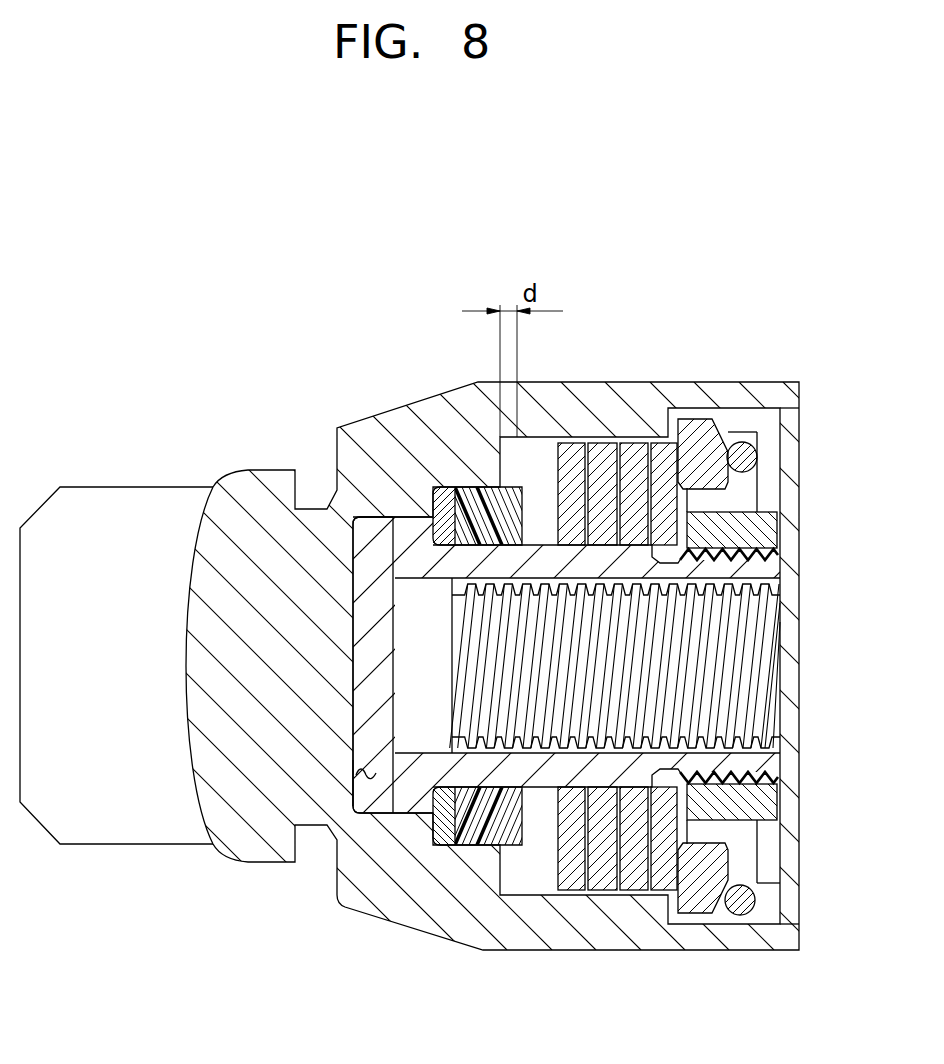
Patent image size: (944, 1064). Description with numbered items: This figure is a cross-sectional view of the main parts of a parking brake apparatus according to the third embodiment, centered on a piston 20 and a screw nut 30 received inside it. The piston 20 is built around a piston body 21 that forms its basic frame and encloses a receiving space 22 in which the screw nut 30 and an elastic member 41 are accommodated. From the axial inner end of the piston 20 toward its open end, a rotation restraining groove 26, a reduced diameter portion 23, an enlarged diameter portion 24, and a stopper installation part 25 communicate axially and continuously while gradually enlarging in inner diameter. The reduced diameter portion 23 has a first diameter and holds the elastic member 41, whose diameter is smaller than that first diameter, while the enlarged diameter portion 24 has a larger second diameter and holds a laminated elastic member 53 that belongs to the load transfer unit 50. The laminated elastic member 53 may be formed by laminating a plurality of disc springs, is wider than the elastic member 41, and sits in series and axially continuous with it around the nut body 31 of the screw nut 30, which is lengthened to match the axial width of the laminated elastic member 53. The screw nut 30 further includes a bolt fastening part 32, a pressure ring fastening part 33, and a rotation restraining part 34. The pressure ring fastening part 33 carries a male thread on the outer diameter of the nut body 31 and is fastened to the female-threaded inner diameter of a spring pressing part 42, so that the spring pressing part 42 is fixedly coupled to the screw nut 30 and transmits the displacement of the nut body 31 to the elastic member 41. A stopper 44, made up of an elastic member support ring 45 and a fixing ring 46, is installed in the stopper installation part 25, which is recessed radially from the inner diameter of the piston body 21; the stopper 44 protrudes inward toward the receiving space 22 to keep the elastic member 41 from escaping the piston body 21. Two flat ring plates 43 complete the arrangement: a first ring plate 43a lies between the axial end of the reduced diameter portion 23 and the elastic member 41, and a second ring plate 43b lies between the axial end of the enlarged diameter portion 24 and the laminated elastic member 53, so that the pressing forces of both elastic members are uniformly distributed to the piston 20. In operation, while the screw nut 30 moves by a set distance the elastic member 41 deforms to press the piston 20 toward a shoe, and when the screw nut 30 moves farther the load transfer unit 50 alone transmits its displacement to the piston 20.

The piston 20 is at (334, 425).
The piston body 21 is at (638, 920).
The receiving space 22 is at (523, 997).
The reduced diameter portion 23 is at (546, 845).
The enlarged diameter portion 24 is at (606, 853).
The stopper installation part 25 is at (770, 436).
The rotation restraining groove 26 is at (363, 778).
The screw nut 30 is at (642, 797).
The nut body 31 is at (750, 573).
The bolt fastening part 32 is at (742, 680).
The pressure ring fastening part 33 is at (765, 797).
The rotation restraining part 34 is at (413, 533).
The elastic member 41 is at (481, 490).
The spring pressing part 42 is at (750, 532).
The ring plate 43 is at (483, 1018).
The first ring plate 43a is at (434, 856).
The second ring plate 43b is at (512, 855).
The stopper 44 is at (675, 328).
The elastic member support ring 45 is at (698, 430).
The fixing ring 46 is at (735, 450).
The load transfer unit 50 is at (633, 470).
The laminated elastic member 53 is at (648, 434).